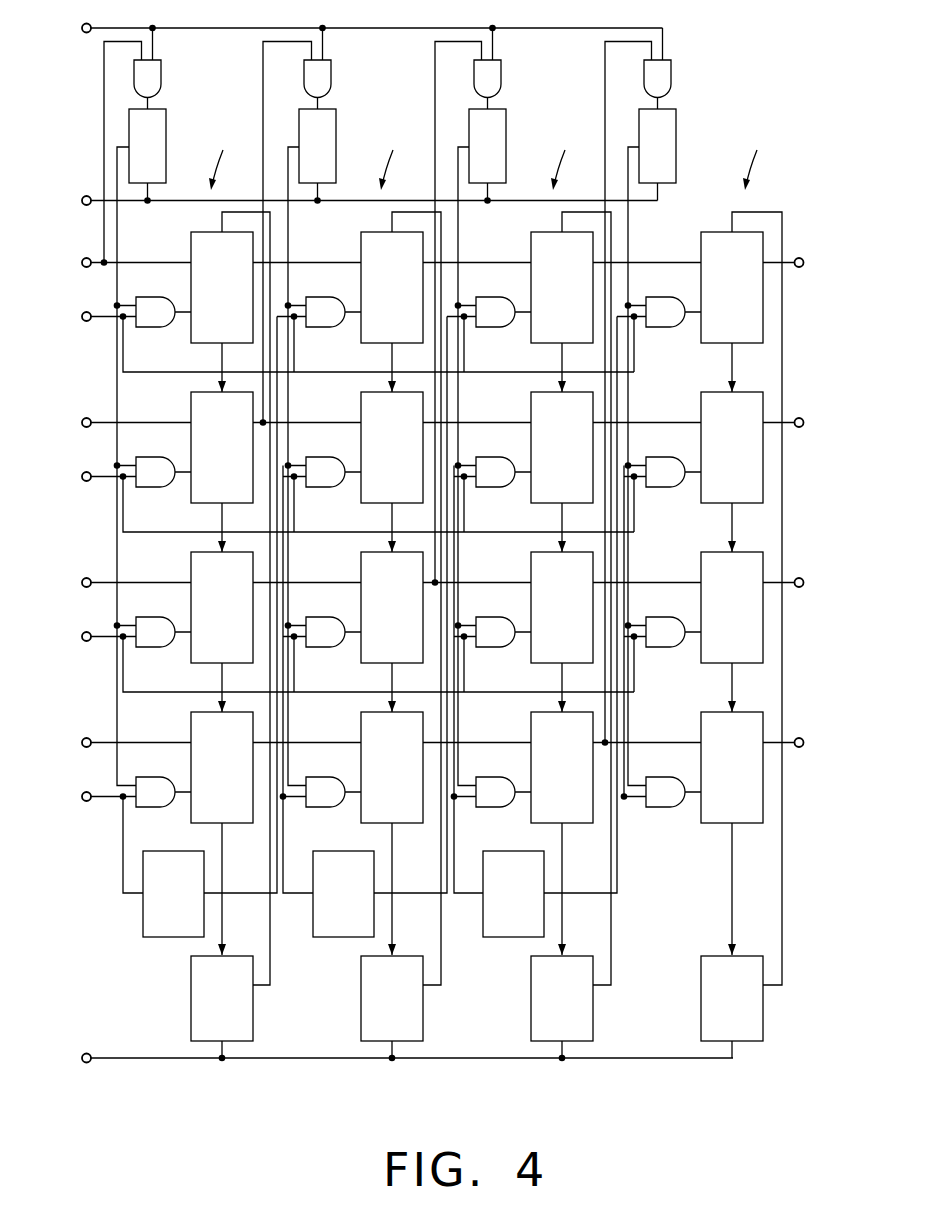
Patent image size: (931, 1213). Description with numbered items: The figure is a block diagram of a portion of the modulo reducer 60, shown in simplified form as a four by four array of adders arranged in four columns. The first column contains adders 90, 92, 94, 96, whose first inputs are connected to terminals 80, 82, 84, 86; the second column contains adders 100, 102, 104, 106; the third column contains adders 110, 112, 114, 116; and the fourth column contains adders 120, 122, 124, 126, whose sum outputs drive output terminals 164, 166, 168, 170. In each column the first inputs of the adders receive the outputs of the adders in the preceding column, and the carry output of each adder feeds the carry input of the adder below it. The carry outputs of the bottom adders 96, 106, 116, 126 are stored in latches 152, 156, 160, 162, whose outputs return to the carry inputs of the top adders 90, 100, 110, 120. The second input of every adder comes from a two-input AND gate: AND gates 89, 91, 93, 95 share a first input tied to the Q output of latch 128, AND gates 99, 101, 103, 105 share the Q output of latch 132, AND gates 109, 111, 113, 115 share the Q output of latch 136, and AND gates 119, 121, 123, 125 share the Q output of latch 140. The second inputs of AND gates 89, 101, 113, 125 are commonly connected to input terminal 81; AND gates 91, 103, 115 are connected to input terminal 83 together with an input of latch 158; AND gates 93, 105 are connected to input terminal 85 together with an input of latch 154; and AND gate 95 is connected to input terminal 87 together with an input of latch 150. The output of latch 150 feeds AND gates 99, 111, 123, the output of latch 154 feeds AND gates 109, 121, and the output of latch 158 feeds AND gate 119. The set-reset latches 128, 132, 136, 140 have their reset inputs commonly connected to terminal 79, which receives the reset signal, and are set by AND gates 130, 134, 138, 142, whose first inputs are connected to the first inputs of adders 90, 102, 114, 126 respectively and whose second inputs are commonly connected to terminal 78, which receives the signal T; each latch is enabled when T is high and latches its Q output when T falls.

The modulo reducer 60 is at (432, 569).
The terminal 78 is at (86, 36).
The terminal 79 is at (84, 176).
The terminal 80 is at (84, 238).
The input terminal 81 is at (86, 292).
The terminal 82 is at (84, 398).
The input terminal 83 is at (86, 452).
The terminal 84 is at (84, 558).
The input terminal 85 is at (86, 612).
The terminal 86 is at (84, 718).
The input terminal 87 is at (86, 772).
The AND gate 89 is at (158, 328).
The adder 90 is at (191, 291).
The AND gate 91 is at (158, 488).
The adder 92 is at (191, 451).
The AND gate 93 is at (158, 648).
The adder 94 is at (191, 611).
The AND gate 95 is at (158, 808).
The adder 96 is at (191, 771).
The AND gate 99 is at (328, 328).
The adder 100 is at (361, 291).
The AND gate 101 is at (328, 488).
The adder 102 is at (361, 451).
The AND gate 103 is at (328, 648).
The adder 104 is at (361, 611).
The AND gate 105 is at (328, 808).
The adder 106 is at (361, 771).
The AND gate 109 is at (498, 328).
The adder 110 is at (531, 291).
The AND gate 111 is at (498, 488).
The adder 112 is at (531, 451).
The AND gate 113 is at (498, 648).
The adder 114 is at (531, 611).
The AND gate 115 is at (498, 808).
The adder 116 is at (531, 771).
The AND gate 119 is at (668, 328).
The adder 120 is at (701, 291).
The AND gate 121 is at (668, 488).
The adder 122 is at (701, 451).
The AND gate 123 is at (668, 648).
The adder 124 is at (701, 611).
The AND gate 125 is at (668, 808).
The adder 126 is at (701, 771).
The latch 128 is at (166, 125).
The AND gate 130 is at (161, 88).
The latch 132 is at (336, 125).
The AND gate 134 is at (331, 88).
The latch 136 is at (506, 125).
The AND gate 138 is at (501, 88).
The latch 140 is at (676, 125).
The AND gate 142 is at (671, 88).
The latch 150 is at (143, 918).
The latch 152 is at (191, 989).
The latch 154 is at (313, 918).
The latch 156 is at (361, 989).
The latch 158 is at (483, 918).
The latch 160 is at (531, 989).
The latch 162 is at (701, 989).
The output terminal 164 is at (800, 238).
The output terminal 166 is at (800, 398).
The output terminal 168 is at (800, 558).
The output terminal 170 is at (800, 718).